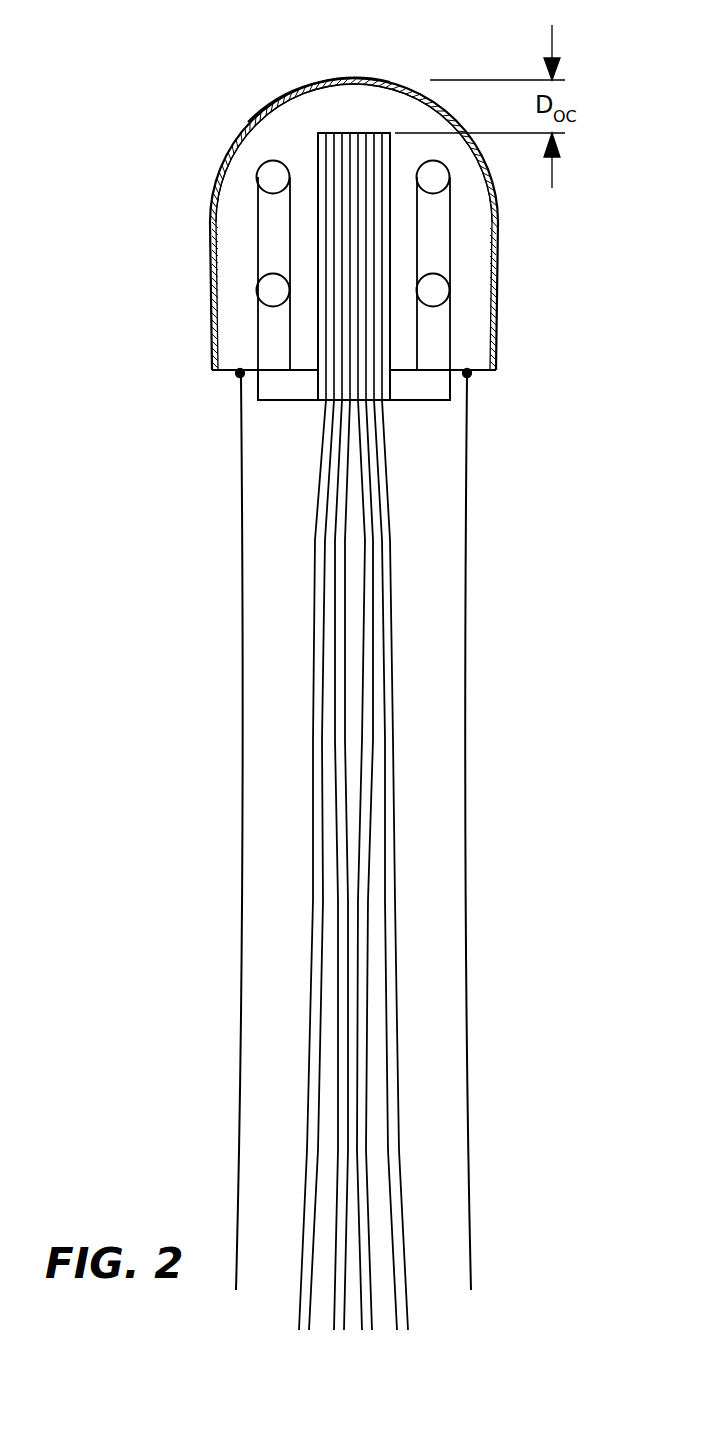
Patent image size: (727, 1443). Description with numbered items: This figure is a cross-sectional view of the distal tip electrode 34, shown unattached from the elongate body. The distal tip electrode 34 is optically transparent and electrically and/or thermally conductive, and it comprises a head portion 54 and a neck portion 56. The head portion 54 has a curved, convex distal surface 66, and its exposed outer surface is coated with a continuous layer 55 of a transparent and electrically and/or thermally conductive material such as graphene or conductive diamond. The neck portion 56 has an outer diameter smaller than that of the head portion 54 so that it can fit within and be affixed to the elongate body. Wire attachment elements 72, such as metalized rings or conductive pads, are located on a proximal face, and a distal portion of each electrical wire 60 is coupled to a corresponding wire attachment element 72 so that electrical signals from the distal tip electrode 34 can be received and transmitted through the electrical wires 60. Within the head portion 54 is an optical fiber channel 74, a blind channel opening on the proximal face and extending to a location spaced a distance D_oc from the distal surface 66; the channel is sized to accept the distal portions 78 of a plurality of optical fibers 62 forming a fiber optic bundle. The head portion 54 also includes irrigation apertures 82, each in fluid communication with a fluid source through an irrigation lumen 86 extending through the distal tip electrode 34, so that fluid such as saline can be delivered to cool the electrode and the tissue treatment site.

The distal tip electrode 34 is at (257, 110).
The layer 55 is at (288, 97).
The distal surface 66 is at (352, 78).
The head portion 54 is at (218, 175).
The optical fiber channel 74 is at (390, 163).
The distal portion 78 is at (378, 252).
The irrigation aperture 82 is at (270, 290).
The irrigation lumen 86 is at (256, 327).
The neck portion 56 is at (412, 400).
The wire attachment element 72 is at (240, 374).
The electrical wire 60 is at (242, 693).
The optical fiber 62 is at (392, 878).